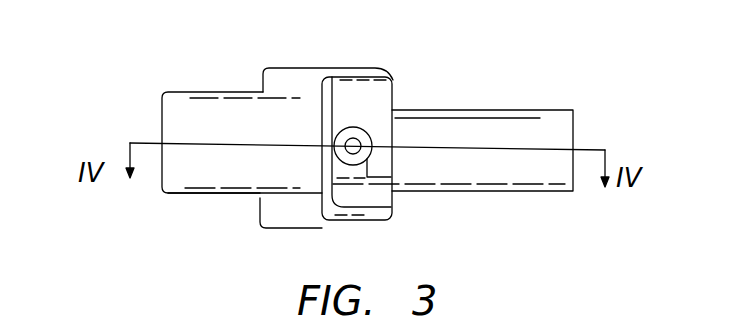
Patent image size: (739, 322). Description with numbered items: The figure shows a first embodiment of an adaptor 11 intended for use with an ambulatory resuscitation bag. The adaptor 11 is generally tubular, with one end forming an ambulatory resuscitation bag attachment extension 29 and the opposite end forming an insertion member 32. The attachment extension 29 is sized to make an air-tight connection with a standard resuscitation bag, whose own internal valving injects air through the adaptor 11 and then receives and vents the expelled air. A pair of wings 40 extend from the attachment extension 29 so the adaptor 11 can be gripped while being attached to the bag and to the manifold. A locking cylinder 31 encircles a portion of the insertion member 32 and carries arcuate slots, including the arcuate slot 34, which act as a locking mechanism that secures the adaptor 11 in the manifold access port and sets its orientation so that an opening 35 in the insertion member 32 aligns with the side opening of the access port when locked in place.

The adaptor 11 is at (250, 82).
The wings 40 is at (283, 77).
The locking cylinder 31 is at (370, 113).
The opening 35 is at (358, 143).
The arcuate slot 34 is at (340, 160).
The insertion member 32 is at (411, 194).
The ambulatory resuscitation bag attachment extension 29 is at (178, 194).